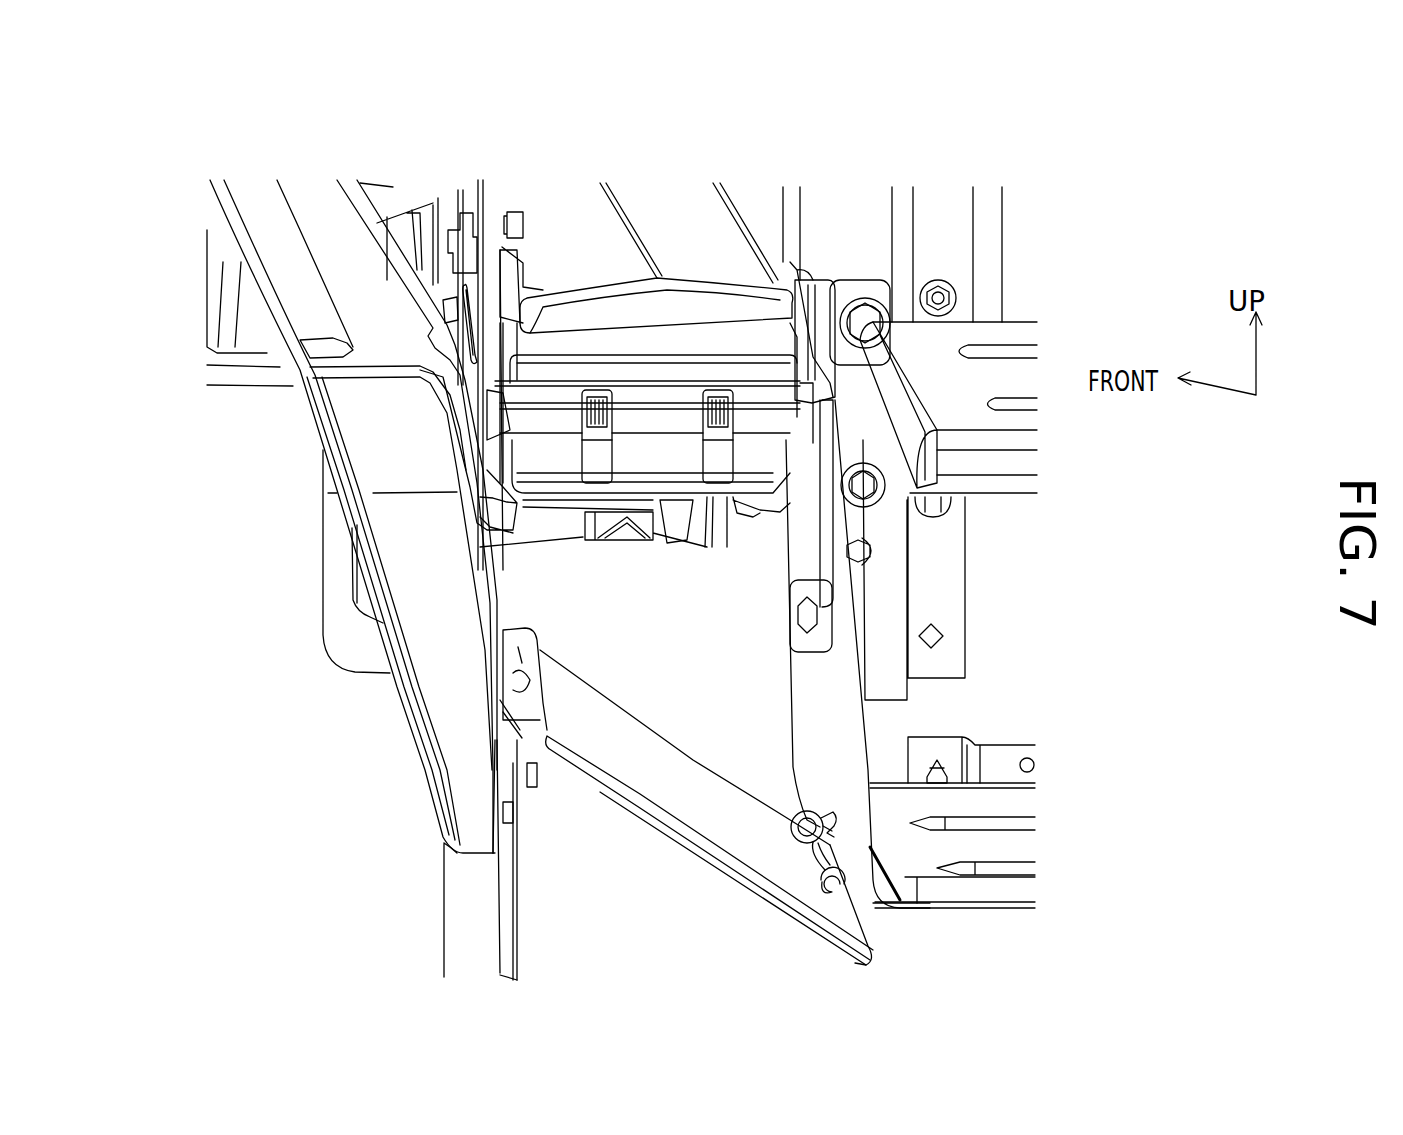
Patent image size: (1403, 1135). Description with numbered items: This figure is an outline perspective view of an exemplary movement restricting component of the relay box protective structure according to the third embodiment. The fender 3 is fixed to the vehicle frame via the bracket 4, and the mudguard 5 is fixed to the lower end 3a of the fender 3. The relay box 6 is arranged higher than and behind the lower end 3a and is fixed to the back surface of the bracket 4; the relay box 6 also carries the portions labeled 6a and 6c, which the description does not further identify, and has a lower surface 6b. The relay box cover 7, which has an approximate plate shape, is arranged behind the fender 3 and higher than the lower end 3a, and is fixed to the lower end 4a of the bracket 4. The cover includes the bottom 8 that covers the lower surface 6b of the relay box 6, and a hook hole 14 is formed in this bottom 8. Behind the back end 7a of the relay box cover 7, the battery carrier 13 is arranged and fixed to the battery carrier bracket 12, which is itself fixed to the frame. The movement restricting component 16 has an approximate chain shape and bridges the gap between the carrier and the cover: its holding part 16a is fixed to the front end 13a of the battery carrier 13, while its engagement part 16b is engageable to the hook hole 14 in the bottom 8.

The fender 3 is at (423, 627).
The lower end 3a is at (445, 880).
The bracket 4 is at (491, 207).
The lower end 4a is at (543, 733).
The mudguard 5 is at (457, 940).
The relay box 6 is at (677, 237).
The lid 6a is at (517, 303).
The lower surface 6b is at (558, 497).
The side bracket of box 6c is at (797, 277).
The relay box cover 7 is at (660, 846).
The back end 7a is at (870, 947).
The bottom 8 is at (730, 833).
The battery carrier bracket 12 is at (955, 573).
The battery carrier 13 is at (1013, 907).
The front end 13a is at (853, 807).
The hook hole 14 is at (813, 870).
The movement restricting component 16 is at (842, 885).
The holding part 16a is at (834, 833).
The engagement part 16b is at (827, 873).